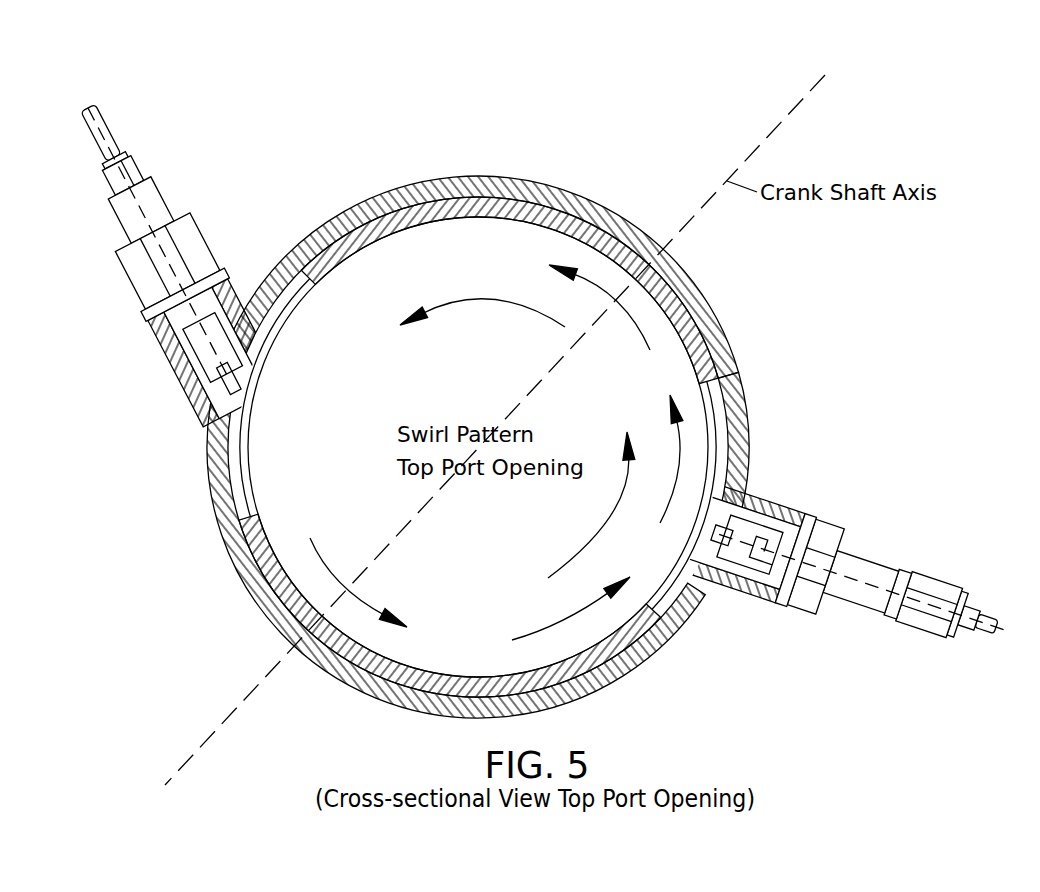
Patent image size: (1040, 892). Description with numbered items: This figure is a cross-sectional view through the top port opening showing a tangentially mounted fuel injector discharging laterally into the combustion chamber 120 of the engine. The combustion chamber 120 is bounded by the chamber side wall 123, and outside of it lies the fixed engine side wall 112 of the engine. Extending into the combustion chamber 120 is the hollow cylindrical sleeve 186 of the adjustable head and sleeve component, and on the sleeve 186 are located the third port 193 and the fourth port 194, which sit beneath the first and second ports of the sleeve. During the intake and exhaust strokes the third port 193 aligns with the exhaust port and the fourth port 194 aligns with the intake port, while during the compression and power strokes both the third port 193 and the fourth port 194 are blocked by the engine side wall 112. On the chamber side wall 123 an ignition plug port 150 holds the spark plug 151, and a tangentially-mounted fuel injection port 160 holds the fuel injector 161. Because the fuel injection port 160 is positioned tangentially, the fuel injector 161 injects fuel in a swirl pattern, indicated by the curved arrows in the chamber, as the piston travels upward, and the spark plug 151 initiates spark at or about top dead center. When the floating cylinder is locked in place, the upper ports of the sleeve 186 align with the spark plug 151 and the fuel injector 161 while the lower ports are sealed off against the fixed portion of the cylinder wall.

The engine side wall 112 is at (376, 183).
The combustion chamber 120 is at (452, 256).
The chamber side wall 123 is at (528, 195).
The hollow cylindrical sleeve 186 is at (600, 222).
The third port 193 is at (726, 455).
The fourth port 194 is at (243, 468).
The tangentially-mounted fuel injection port 160 is at (223, 388).
The fuel injector 161 is at (165, 196).
The ignition plug port 150 is at (723, 558).
The spark plug 151 is at (850, 618).